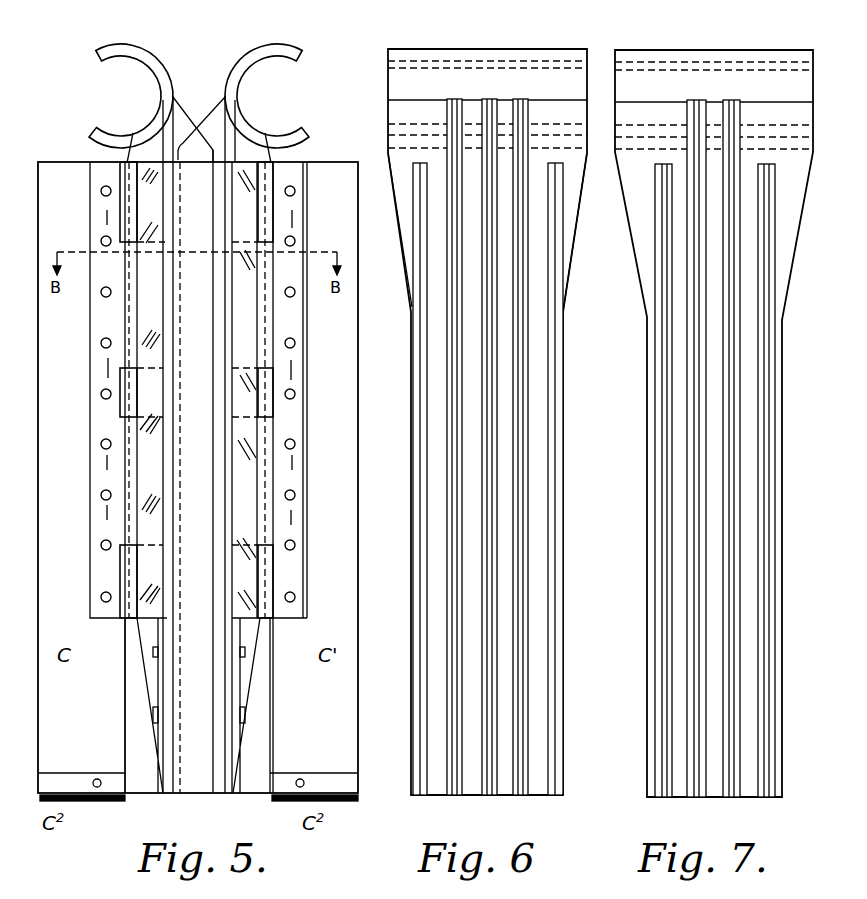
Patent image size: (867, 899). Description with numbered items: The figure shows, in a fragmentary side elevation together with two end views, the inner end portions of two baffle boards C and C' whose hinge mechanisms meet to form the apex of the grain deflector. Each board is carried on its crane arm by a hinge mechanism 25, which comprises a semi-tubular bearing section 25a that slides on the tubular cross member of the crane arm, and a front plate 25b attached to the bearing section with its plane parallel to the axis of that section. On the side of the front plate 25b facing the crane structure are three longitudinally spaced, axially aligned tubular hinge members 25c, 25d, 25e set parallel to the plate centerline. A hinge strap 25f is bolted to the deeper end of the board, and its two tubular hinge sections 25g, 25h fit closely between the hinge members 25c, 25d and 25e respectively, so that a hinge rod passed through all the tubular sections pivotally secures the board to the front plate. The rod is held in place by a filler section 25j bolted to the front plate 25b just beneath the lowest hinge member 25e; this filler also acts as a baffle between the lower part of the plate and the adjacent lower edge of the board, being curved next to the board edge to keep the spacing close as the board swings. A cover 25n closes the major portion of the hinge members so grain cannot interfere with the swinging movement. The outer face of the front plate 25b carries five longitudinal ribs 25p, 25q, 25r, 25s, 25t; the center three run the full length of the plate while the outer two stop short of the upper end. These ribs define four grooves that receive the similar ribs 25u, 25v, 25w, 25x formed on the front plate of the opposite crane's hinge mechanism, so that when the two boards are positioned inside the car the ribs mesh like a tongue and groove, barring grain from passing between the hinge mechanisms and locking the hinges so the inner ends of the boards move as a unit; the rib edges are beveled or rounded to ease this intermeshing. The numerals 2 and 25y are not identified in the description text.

In FIG. 5, the base plate 2 is at (55, 773).
In FIG. 5, the hinge mechanism 25 is at (317, 231).
In FIG. 5, the semi-tubular bearing section 25a is at (117, 50).
In FIG. 6, the semi-tubular bearing section 25a is at (488, 58).
In FIG. 7, the semi-tubular bearing section 25a is at (722, 46).
In FIG. 5, the front plate 25b is at (166, 240).
In FIG. 6, the front plate 25b is at (570, 198).
In FIG. 7, the front plate 25b is at (714, 423).
In FIG. 5, the tubular hinge member 25c is at (120, 212).
In FIG. 5, the tubular hinge member 25d is at (120, 395).
In FIG. 5, the tubular hinge member 25e is at (120, 577).
In FIG. 5, the hinge strap 25f is at (105, 531).
In FIG. 5, the tubular hinge section 25g is at (130, 266).
In FIG. 6, the tubular hinge section 25g is at (575, 256).
In FIG. 5, the tubular hinge section 25h is at (126, 469).
In FIG. 5, the filler section 25j is at (130, 693).
In FIG. 5, the cover 25n is at (140, 493).
In FIG. 5, the rib 25p is at (190, 177).
In FIG. 6, the rib 25p is at (420, 383).
In FIG. 5, the rib 25q is at (178, 168).
In FIG. 6, the rib 25q is at (450, 108).
In FIG. 6, the rib 25r is at (487, 106).
In FIG. 6, the rib 25s is at (520, 106).
In FIG. 6, the rib 25t is at (560, 385).
In FIG. 5, the rib 25u is at (217, 158).
In FIG. 7, the rib 25u is at (770, 428).
In FIG. 5, the rib 25v is at (215, 118).
In FIG. 7, the rib 25w is at (695, 110).
In FIG. 7, the rib 25x is at (660, 415).
In FIG. 7, the rib 25y is at (735, 112).